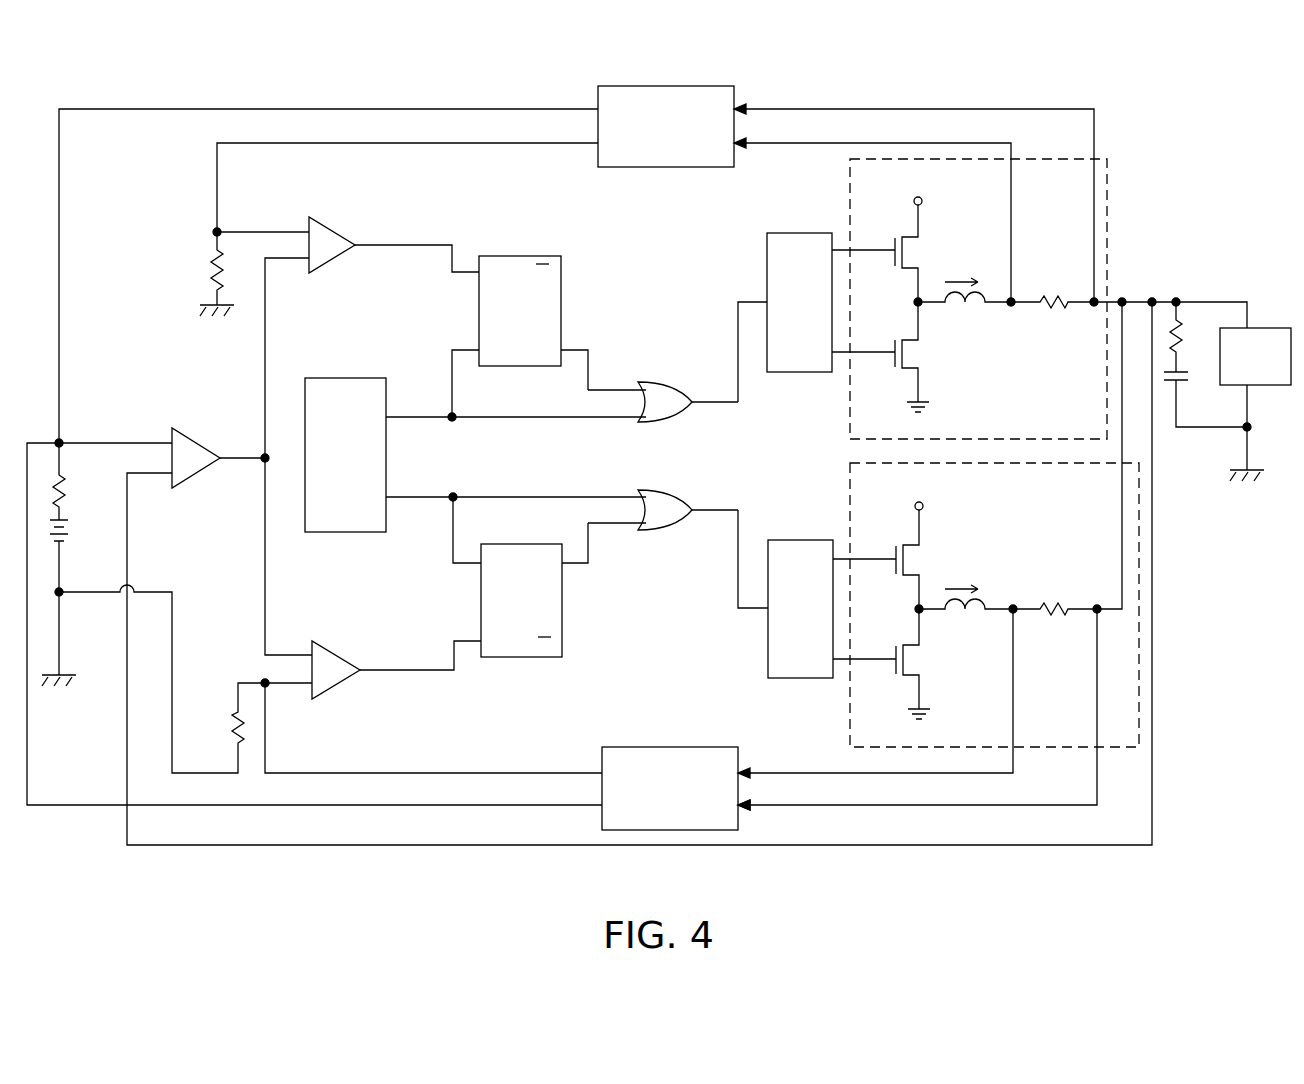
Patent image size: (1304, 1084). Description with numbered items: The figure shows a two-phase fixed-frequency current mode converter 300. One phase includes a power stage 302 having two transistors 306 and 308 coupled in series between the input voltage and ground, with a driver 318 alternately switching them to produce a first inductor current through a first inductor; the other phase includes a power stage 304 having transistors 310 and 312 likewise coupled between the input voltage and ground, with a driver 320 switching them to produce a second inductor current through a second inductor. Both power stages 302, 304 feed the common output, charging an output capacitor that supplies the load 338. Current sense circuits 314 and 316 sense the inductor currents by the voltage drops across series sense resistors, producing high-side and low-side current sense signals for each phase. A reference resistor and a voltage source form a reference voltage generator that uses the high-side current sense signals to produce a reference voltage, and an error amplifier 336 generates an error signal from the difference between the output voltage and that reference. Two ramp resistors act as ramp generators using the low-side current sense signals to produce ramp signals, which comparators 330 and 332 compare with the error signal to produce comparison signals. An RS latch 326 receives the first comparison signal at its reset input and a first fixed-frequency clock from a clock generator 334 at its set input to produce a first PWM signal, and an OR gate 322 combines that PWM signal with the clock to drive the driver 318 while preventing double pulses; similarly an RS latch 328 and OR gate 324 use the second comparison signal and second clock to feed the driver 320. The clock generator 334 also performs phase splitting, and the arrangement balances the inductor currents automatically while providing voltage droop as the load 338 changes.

The two-phase fixed-frequency current mode converter 300 is at (1232, 142).
The power stage 302 is at (1107, 185).
The power stage 304 is at (1139, 597).
The transistor 306 is at (935, 243).
The transistor 308 is at (937, 362).
The transistor 310 is at (937, 548).
The transistor 312 is at (939, 670).
The current sense circuit 314 is at (676, 170).
The current sense circuit 316 is at (675, 746).
The driver 318 is at (793, 233).
The driver 320 is at (793, 540).
The OR gate 322 is at (648, 383).
The OR gate 324 is at (668, 490).
The RS latch 326 is at (515, 256).
The RS latch 328 is at (520, 660).
The comparator 330 is at (334, 223).
The comparator 332 is at (335, 650).
The clock generator 334 is at (340, 378).
The error amplifier 336 is at (197, 436).
The load 338 is at (1258, 328).